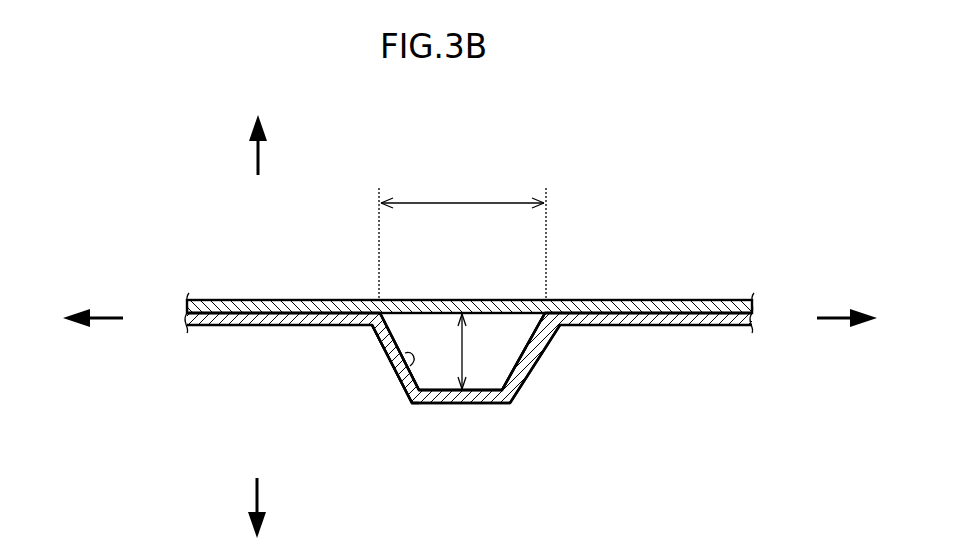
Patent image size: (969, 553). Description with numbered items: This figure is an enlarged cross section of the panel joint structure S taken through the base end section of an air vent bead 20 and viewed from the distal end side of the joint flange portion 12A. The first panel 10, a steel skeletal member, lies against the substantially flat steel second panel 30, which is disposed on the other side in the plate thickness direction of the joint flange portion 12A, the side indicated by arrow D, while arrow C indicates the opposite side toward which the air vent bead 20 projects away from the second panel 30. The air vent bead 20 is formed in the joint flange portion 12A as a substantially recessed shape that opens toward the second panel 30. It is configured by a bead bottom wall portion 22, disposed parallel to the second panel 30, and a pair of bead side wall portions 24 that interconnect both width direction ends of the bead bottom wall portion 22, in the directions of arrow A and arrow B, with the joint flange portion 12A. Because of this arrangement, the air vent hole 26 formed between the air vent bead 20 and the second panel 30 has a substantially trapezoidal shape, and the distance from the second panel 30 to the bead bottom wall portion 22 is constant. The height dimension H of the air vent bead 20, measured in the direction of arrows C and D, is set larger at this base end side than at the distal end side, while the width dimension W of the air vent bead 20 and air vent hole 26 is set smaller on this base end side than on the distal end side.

The first panel 10 is at (702, 330).
The joint flange portion 12A is at (648, 326).
The air vent bead 20 is at (497, 408).
The bead bottom wall portion 22 is at (465, 404).
The bead side wall portions 24 is at (384, 350).
The air vent hole 26 is at (397, 373).
The second panel 30 is at (695, 298).
The width dimension W is at (470, 200).
The height dimension H is at (452, 350).
The panel joint structure S is at (622, 213).
The direction of arrow A is at (103, 322).
The direction of arrow B is at (835, 322).
The direction of arrow C is at (260, 500).
The direction of arrow D is at (262, 152).